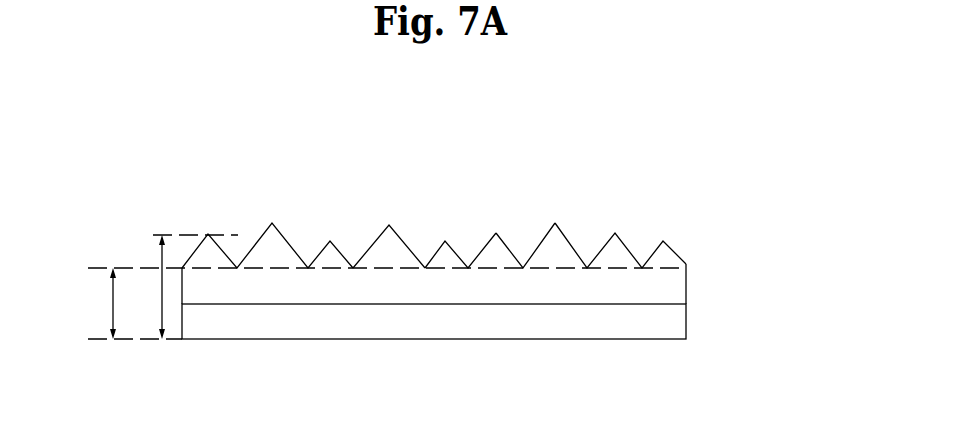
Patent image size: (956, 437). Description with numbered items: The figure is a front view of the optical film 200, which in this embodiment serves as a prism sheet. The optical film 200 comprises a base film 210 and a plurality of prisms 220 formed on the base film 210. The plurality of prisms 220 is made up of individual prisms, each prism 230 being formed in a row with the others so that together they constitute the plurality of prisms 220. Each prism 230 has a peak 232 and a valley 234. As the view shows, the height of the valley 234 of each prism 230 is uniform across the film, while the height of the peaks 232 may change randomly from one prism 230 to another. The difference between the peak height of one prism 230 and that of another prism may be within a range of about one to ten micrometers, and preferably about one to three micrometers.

The optical film 200 is at (288, 140).
The base film 210 is at (672, 326).
The plurality of prisms 220 is at (694, 282).
The prism 230 is at (676, 254).
The peak 232 is at (389, 225).
The valley 234 is at (523, 268).